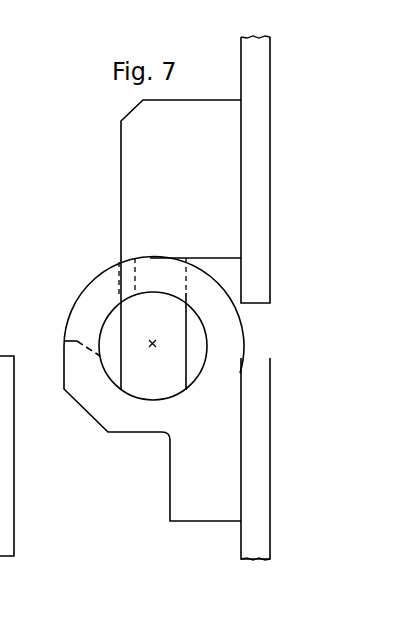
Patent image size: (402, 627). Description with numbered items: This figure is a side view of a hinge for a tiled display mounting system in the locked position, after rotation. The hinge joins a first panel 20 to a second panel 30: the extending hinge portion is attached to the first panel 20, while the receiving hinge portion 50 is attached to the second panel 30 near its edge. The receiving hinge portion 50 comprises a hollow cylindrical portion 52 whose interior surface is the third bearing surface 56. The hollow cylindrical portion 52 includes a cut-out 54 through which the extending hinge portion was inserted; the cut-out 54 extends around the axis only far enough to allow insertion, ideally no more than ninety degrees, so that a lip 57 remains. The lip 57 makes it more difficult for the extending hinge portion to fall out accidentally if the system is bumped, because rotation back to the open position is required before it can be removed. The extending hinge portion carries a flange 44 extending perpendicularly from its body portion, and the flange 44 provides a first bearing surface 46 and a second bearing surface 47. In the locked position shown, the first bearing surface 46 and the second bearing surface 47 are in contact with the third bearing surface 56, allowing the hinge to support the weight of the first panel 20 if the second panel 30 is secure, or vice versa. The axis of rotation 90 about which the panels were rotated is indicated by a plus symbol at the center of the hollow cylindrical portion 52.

The first panel 20 is at (258, 65).
The second panel 30 is at (196, 138).
The flange 44 is at (156, 341).
The first bearing surface 46 is at (170, 398).
The second bearing surface 47 is at (160, 293).
The receiving hinge portion 50 is at (210, 465).
The hollow cylindrical portion 52 is at (62, 365).
The cut-out 54 is at (93, 277).
The third bearing surface 56 is at (206, 352).
The lip 57 is at (87, 392).
The axis of rotation 90 is at (0, 420).